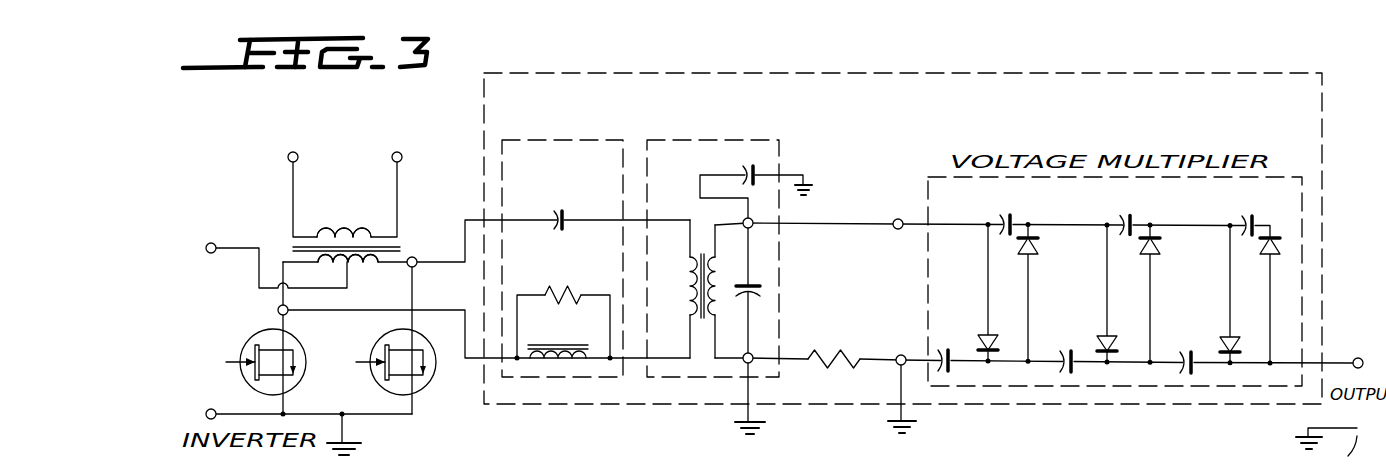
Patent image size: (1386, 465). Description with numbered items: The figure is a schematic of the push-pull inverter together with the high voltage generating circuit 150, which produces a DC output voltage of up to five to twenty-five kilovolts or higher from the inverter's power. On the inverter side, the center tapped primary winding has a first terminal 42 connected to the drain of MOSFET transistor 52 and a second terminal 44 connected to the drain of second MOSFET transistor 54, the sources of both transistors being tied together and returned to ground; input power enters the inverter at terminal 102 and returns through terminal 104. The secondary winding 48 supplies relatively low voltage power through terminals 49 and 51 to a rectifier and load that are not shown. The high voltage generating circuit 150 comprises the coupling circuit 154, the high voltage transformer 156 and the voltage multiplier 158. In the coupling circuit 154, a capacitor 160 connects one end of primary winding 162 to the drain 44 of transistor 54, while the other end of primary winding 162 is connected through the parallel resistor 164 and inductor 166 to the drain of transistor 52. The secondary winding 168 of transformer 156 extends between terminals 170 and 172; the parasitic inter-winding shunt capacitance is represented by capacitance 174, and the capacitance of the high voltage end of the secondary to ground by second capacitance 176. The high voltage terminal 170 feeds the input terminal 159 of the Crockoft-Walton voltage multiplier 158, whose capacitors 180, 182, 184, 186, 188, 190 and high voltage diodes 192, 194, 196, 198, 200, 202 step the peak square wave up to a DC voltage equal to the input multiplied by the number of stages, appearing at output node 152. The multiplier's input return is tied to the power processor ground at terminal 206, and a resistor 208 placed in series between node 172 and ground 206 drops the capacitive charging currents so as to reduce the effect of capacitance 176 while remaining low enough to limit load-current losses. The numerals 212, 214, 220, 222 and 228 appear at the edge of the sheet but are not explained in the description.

The first terminal 42 is at (278, 309).
The second terminal 44 is at (416, 267).
The first secondary winding 48 is at (353, 217).
The terminal 49 is at (288, 157).
The terminal 51 is at (402, 157).
The MOSFET transistor 52 is at (254, 352).
The second MOSFET transistor 54 is at (384, 350).
The inverter input terminal 102 is at (225, 226).
The terminal 104 is at (218, 401).
The high voltage generating circuit 150 is at (942, 71).
The node 152 is at (1372, 352).
The coupling circuit 154 is at (572, 118).
The high voltage transformer 156 is at (710, 118).
The voltage multiplier 158 is at (923, 169).
The input terminal 159 is at (898, 218).
The capacitor 160 is at (583, 189).
The primary winding 162 is at (692, 284).
The resistor 164 is at (576, 275).
The inductor 166 is at (584, 323).
The secondary winding 168 is at (717, 273).
The secondary winding terminal 170 is at (753, 226).
The secondary winding terminal 172 is at (755, 353).
The capacitance 174 is at (763, 292).
The second capacitance 176 is at (744, 166).
The capacitor 180 is at (956, 339).
The capacitor 182 is at (1079, 337).
The capacitor 184 is at (1186, 350).
The capacitor 186 is at (1004, 214).
The capacitor 188 is at (1124, 214).
The capacitor 190 is at (1249, 214).
The high voltage diode 192 is at (986, 332).
The high voltage diode 194 is at (1101, 333).
The high voltage diode 196 is at (1226, 336).
The high voltage diode 198 is at (1037, 251).
The high voltage diode 200 is at (1157, 255).
The high voltage diode 202 is at (1266, 260).
The terminal 206 is at (914, 343).
The resistor 208 is at (826, 367).
The component (off sheet) 212 is at (628, 460).
The component (off sheet) 214 is at (981, 464).
The component (off sheet) 220 is at (908, 460).
The component (off sheet) 222 is at (1095, 454).
The component (off sheet) 228 is at (1018, 454).